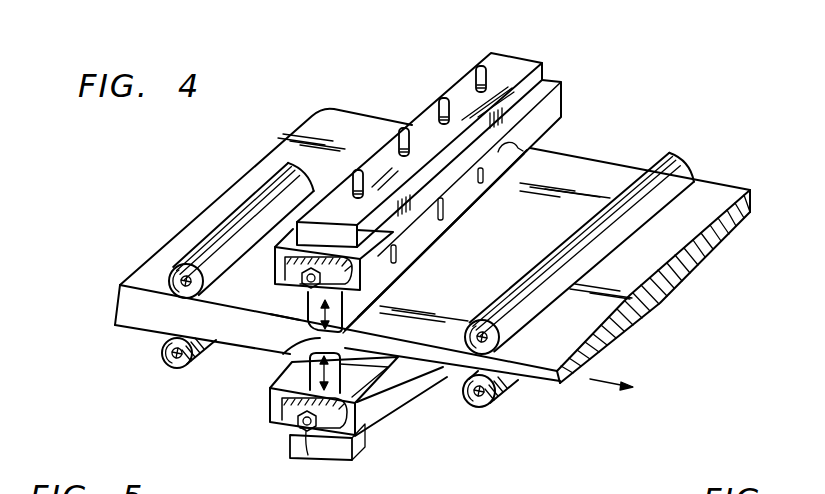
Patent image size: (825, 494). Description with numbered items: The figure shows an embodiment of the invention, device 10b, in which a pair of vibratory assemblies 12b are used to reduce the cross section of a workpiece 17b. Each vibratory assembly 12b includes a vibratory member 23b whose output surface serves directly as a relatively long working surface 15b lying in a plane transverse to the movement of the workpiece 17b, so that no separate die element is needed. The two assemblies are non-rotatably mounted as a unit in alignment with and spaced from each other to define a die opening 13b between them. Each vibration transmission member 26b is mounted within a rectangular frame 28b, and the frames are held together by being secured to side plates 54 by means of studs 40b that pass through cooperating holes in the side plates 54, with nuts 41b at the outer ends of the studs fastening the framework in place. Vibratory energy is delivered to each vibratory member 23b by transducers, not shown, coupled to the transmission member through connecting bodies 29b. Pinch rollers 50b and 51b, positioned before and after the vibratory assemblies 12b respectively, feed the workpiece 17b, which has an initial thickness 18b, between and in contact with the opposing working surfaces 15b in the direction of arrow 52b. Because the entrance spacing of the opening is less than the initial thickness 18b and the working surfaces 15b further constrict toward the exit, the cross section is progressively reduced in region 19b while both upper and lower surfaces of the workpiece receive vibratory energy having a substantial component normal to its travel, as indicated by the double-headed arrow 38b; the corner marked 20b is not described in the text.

The device 10b is at (557, 127).
The vibratory assembly 12b is at (519, 78).
The die opening 13b is at (347, 342).
The working surface 15b is at (316, 335).
The workpiece 17b is at (150, 312).
The initial thickness 18b is at (118, 308).
The reduction region 19b is at (285, 353).
The web corner 20b is at (558, 384).
The vibratory member 23b is at (433, 228).
The vibration transmission member 26b is at (407, 258).
The rectangular frame 28b is at (563, 95).
The connecting body 29b is at (436, 108).
The double-headed arrow 38b is at (342, 316).
The stud 40b is at (301, 285).
The nut 41b is at (358, 292).
The pinch roller 50b is at (178, 265).
The pinch roller 51b is at (502, 341).
The arrow 52b is at (604, 379).
The side plate 54 is at (288, 268).